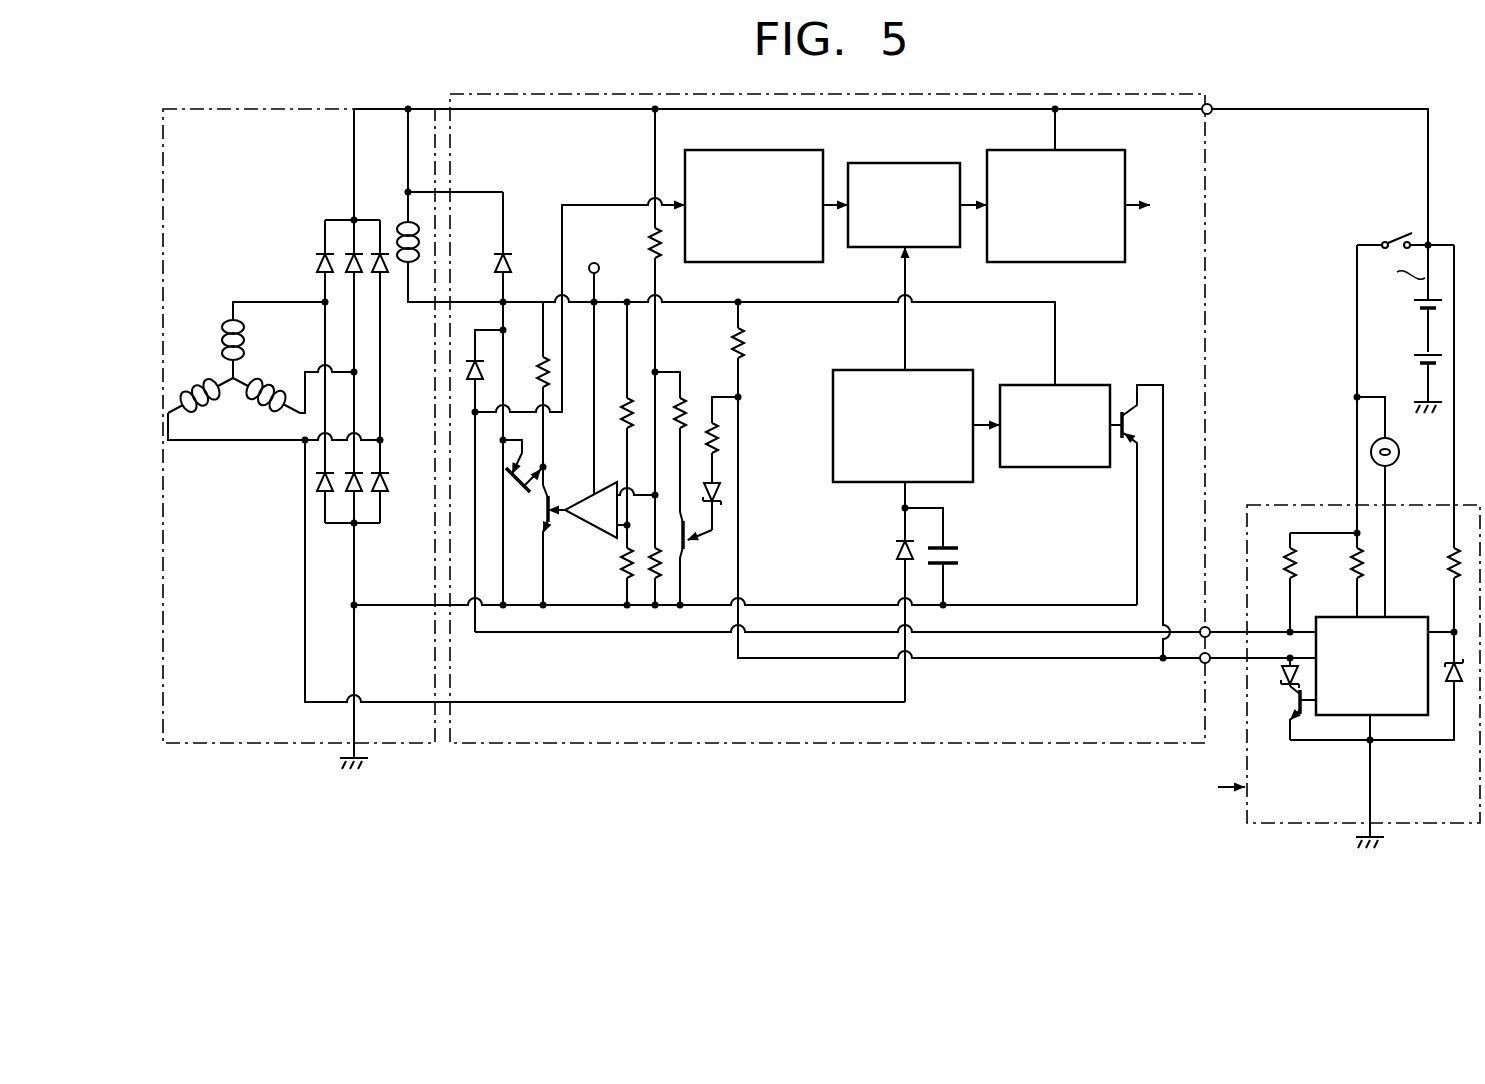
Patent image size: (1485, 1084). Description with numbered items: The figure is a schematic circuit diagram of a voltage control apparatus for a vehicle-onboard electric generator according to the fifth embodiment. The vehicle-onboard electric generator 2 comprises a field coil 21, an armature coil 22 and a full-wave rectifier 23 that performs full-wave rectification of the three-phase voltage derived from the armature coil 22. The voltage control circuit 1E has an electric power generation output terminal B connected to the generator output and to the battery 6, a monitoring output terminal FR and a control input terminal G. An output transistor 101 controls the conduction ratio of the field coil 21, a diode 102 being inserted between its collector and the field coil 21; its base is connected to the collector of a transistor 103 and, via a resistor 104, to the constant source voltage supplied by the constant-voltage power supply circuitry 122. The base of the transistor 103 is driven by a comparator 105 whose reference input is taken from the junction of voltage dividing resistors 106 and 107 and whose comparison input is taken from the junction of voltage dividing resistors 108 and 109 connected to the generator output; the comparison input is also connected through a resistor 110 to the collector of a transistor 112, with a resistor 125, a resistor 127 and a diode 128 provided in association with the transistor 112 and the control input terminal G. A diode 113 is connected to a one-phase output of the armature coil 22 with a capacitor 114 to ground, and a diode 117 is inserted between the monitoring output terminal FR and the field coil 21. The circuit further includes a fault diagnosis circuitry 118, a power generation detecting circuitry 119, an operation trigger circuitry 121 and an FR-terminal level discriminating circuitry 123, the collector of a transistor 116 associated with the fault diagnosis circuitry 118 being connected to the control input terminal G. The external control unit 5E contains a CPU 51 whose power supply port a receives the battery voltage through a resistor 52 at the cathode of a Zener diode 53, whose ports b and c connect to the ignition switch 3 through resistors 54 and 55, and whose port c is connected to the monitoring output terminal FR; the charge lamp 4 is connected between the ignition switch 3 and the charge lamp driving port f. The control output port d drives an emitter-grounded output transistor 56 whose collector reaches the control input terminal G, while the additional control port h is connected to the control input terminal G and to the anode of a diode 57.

The vehicle-onboard electric generator 2 is at (228, 748).
The field coil 21 is at (398, 236).
The armature coil 22 is at (222, 338).
The full-wave rectifier 23 is at (347, 302).
The ignition switch 3 is at (1400, 238).
The charge lamp 4 is at (1400, 455).
The battery 6 is at (1420, 340).
The CPU 51 is at (1400, 616).
The resistor 52 is at (1449, 580).
The Zener diode 53 is at (1456, 690).
The resistor 54 is at (1350, 572).
The resistor 55 is at (1286, 566).
The output transistor 56 is at (1288, 702).
The diode 57 is at (1296, 650).
The output transistor 101 is at (530, 462).
The diode 102 is at (510, 260).
The transistor 103 is at (548, 520).
The resistor 104 is at (540, 362).
The comparator 105 is at (584, 527).
The voltage dividing resistor 106 is at (630, 400).
The voltage dividing resistor 107 is at (625, 578).
The voltage dividing resistor 108 is at (662, 255).
The voltage dividing resistor 109 is at (652, 578).
The resistor 110 is at (712, 392).
The transistor 112 is at (700, 556).
The diode 113 is at (893, 548).
The capacitor 114 is at (960, 557).
The transistor 116 is at (1128, 440).
The diode 117 is at (475, 360).
The fault diagnosis circuitry 118 is at (1080, 384).
The power generation detecting circuitry 119 is at (945, 368).
The operation trigger circuitry 121 is at (905, 163).
The constant-voltage power supply circuitry 122 is at (1073, 150).
The FR-terminal level discriminating circuitry 123 is at (712, 150).
The resistor 125 is at (750, 345).
The resistor 127 is at (720, 440).
The diode 128 is at (722, 492).
The voltage control circuit 1E is at (822, 748).
The external control unit 5E is at (1312, 832).
The output terminal B is at (1212, 113).
The monitoring output terminal FR is at (1212, 627).
The control input terminal G is at (1210, 665).